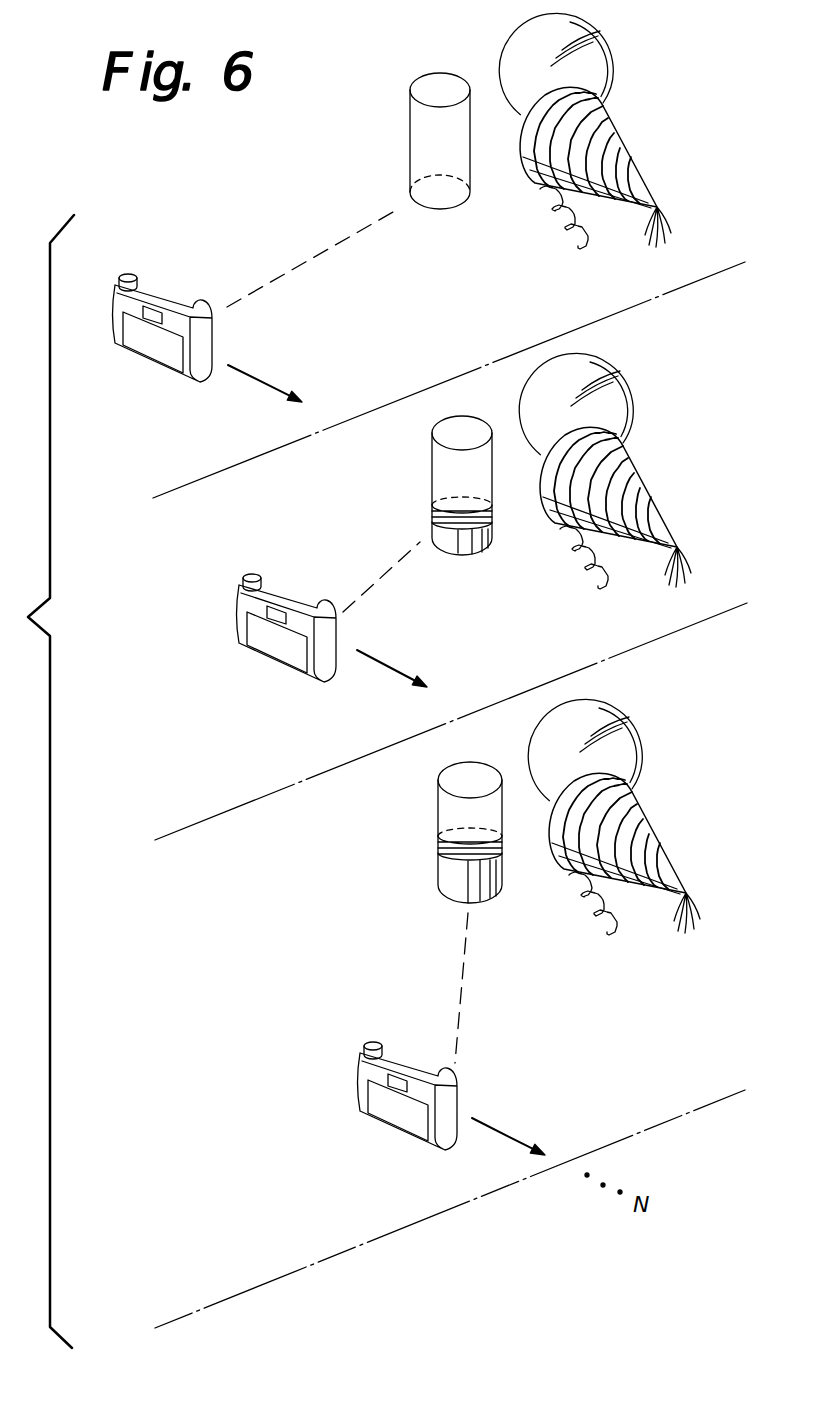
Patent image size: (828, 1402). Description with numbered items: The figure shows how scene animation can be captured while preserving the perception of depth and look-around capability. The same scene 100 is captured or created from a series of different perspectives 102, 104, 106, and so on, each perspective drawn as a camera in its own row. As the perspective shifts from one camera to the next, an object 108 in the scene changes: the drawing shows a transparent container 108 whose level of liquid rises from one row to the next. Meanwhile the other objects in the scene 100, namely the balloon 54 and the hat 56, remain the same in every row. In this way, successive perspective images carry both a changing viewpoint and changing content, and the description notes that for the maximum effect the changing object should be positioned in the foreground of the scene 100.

The balloon 54 is at (606, 40).
The hat 56 is at (634, 162).
The scene 100 is at (624, 474).
The first perspective 102 is at (153, 426).
The second perspective 104 is at (173, 718).
The third perspective 106 is at (267, 1130).
The transparent container 108 is at (391, 161).